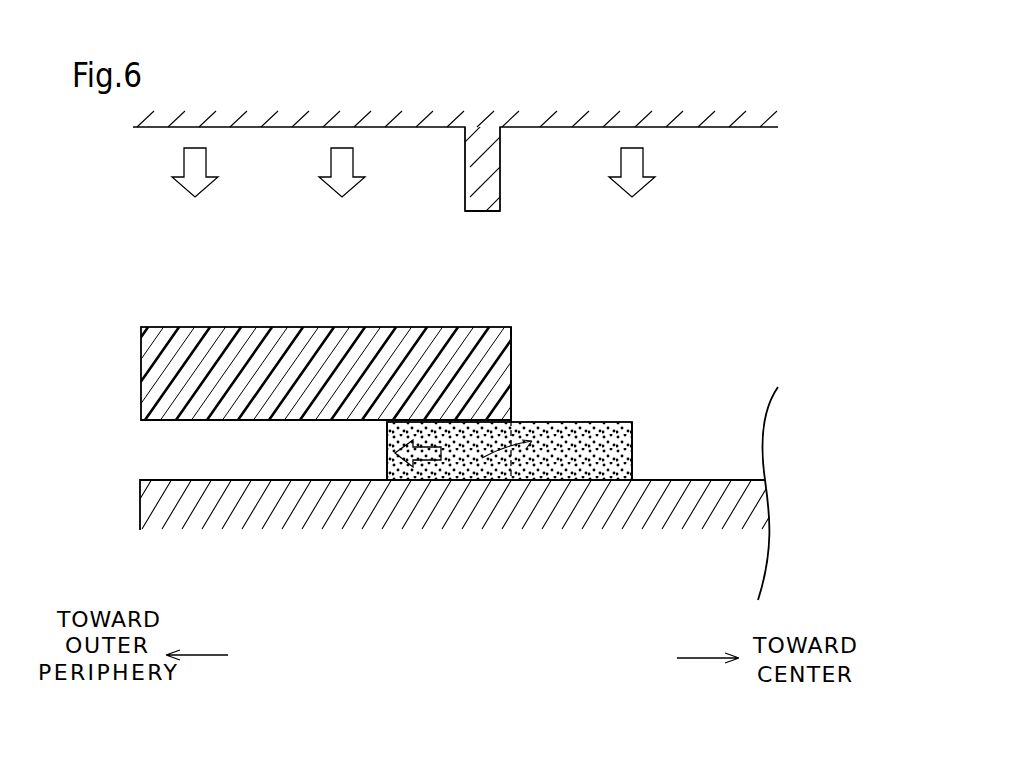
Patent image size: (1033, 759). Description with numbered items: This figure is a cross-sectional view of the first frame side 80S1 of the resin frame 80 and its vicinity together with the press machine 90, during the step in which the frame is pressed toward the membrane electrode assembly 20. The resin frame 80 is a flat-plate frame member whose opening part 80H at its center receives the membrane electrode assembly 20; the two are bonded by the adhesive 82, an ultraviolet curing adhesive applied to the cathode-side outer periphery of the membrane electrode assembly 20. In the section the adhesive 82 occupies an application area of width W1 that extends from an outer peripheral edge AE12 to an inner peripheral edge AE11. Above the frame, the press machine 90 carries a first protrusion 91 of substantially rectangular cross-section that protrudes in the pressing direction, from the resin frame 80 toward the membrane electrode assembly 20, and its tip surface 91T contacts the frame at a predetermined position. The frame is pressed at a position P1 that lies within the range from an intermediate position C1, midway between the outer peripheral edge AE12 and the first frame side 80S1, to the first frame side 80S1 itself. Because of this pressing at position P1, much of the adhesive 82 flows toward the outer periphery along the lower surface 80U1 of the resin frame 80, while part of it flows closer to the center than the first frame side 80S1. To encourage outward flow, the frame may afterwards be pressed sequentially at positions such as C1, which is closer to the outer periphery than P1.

The press machine 90 is at (671, 158).
The first protrusion 91 is at (501, 187).
The tip surface 91T is at (466, 212).
The resin frame 80 is at (240, 327).
The position P1 is at (488, 313).
The opening part 80H is at (512, 350).
The lower surface 80U1 is at (175, 420).
The adhesive 82 is at (606, 422).
The membrane electrode assembly 20 is at (712, 492).
The outer peripheral edge AE12 is at (387, 480).
The inner peripheral edge AE11 is at (632, 480).
The intermediate position C1 is at (449, 421).
The first frame side 80S1 is at (511, 480).
The width W1 is at (388, 609).